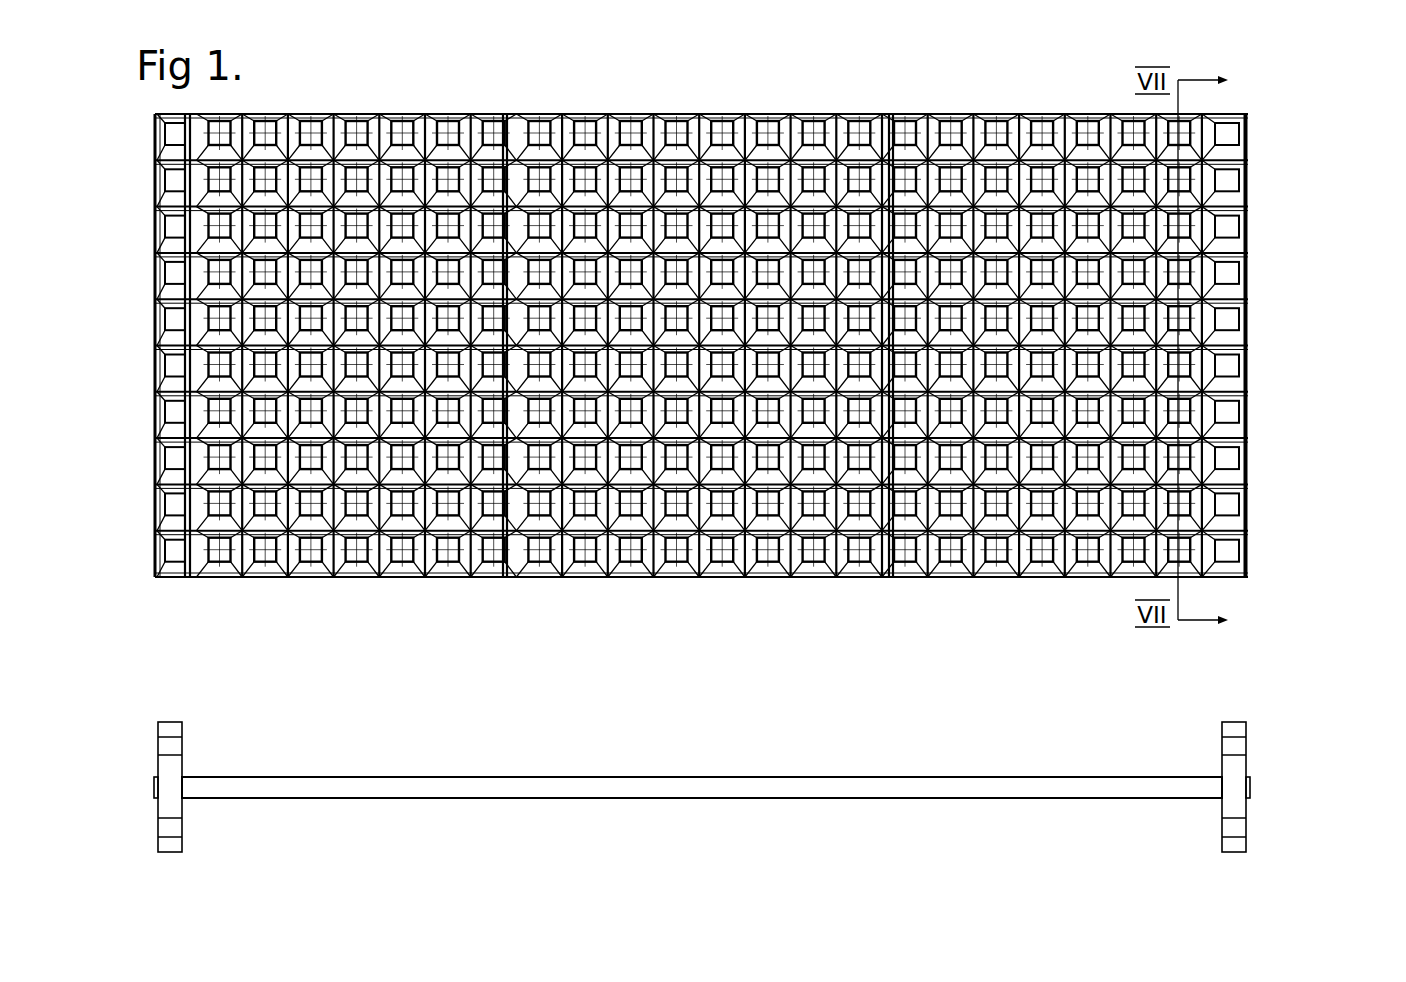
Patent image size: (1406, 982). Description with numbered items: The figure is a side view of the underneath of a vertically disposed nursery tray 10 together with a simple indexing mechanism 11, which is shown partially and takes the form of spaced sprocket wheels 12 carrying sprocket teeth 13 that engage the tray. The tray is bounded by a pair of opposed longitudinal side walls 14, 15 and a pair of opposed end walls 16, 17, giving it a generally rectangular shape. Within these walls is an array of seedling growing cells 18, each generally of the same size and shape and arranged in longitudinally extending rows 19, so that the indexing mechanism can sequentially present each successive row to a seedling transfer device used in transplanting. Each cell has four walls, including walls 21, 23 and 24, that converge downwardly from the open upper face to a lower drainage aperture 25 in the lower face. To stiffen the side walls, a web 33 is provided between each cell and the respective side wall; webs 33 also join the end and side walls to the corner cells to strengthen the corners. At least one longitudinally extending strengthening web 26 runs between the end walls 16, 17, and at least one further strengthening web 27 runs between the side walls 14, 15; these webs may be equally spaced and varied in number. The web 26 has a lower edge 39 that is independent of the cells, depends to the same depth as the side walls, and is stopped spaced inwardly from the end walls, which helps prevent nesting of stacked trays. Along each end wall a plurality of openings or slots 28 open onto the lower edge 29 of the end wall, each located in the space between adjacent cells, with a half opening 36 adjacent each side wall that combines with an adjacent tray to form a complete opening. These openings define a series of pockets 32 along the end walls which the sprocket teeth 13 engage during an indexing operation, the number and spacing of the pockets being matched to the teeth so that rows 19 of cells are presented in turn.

The nursery tray 10 is at (723, 600).
The indexing mechanism 11 is at (642, 790).
The sprocket wheels 12 is at (702, 787).
The sprocket teeth 13 is at (702, 792).
The longitudinal side wall 14 is at (673, 577).
The longitudinal side wall 15 is at (532, 113).
The end wall 16 is at (185, 388).
The end wall 17 is at (1247, 355).
The seedling growing cell 18 is at (420, 527).
The longitudinally extending rows 19 is at (1247, 556).
The cell wall 21 is at (385, 518).
The cell wall 23 is at (418, 516).
The cell wall 24 is at (393, 490).
The lower drainage aperture 25 is at (408, 515).
The longitudinally extending strengthening web 26 is at (758, 349).
The further strengthening web 27 is at (719, 597).
The openings or slots 28 is at (1305, 324).
The lower edge of end wall 29 is at (748, 349).
The pockets 32 is at (1292, 322).
The web 33 is at (631, 349).
The half opening 36 is at (1281, 338).
The lower edge of web 39 is at (424, 349).